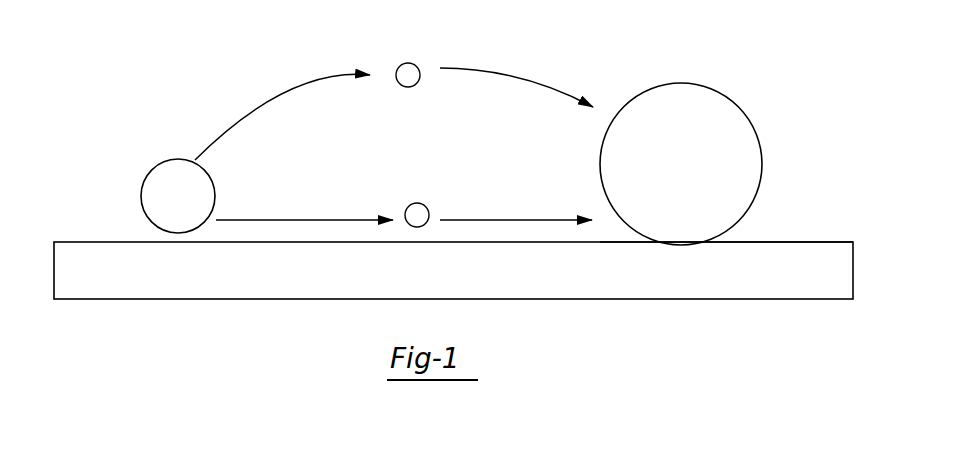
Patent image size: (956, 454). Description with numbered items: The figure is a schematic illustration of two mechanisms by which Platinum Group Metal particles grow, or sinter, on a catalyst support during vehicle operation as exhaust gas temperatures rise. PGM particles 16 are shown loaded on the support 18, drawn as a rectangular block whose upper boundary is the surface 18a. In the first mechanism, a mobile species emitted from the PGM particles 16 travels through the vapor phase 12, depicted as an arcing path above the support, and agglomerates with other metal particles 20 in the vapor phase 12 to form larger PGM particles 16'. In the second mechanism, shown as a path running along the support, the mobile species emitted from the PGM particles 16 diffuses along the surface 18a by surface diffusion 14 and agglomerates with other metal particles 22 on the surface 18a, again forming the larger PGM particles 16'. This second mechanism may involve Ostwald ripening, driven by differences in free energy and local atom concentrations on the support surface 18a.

The vapor phase 12 is at (398, 52).
The surface diffusion 14 is at (410, 196).
The PGM particles 16 is at (158, 186).
The larger PGM particles 16' is at (716, 164).
The support 18 is at (770, 283).
The surface of the support 18a is at (805, 240).
The metal particles in the vapor phase 20 is at (408, 76).
The metal particles on the surface 22 is at (420, 212).